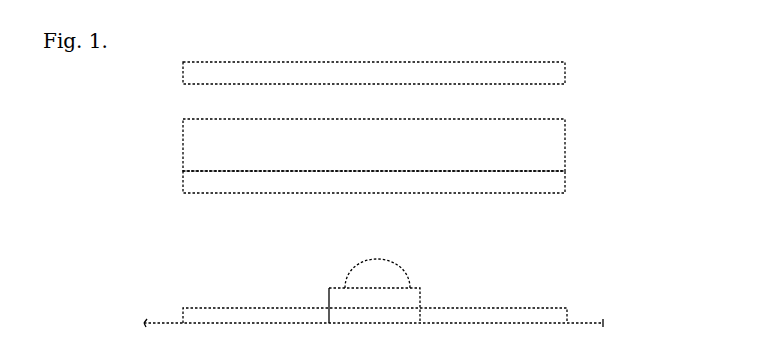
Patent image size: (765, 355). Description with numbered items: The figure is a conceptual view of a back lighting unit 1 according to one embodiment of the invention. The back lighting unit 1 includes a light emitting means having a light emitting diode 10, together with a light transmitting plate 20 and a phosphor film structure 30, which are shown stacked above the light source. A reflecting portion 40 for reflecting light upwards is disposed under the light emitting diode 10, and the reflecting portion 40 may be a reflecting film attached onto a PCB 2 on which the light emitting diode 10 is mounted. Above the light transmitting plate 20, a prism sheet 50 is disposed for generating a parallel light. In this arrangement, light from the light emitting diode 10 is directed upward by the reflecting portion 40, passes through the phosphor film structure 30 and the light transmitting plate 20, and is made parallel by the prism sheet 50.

The back lighting unit 1 is at (656, 93).
The PCB 2 is at (588, 323).
The light emitting diode 10 is at (410, 284).
The light transmitting plate 20 is at (565, 145).
The phosphor film structure 30 is at (565, 182).
The reflecting portion 40 is at (516, 308).
The prism sheet 50 is at (565, 72).